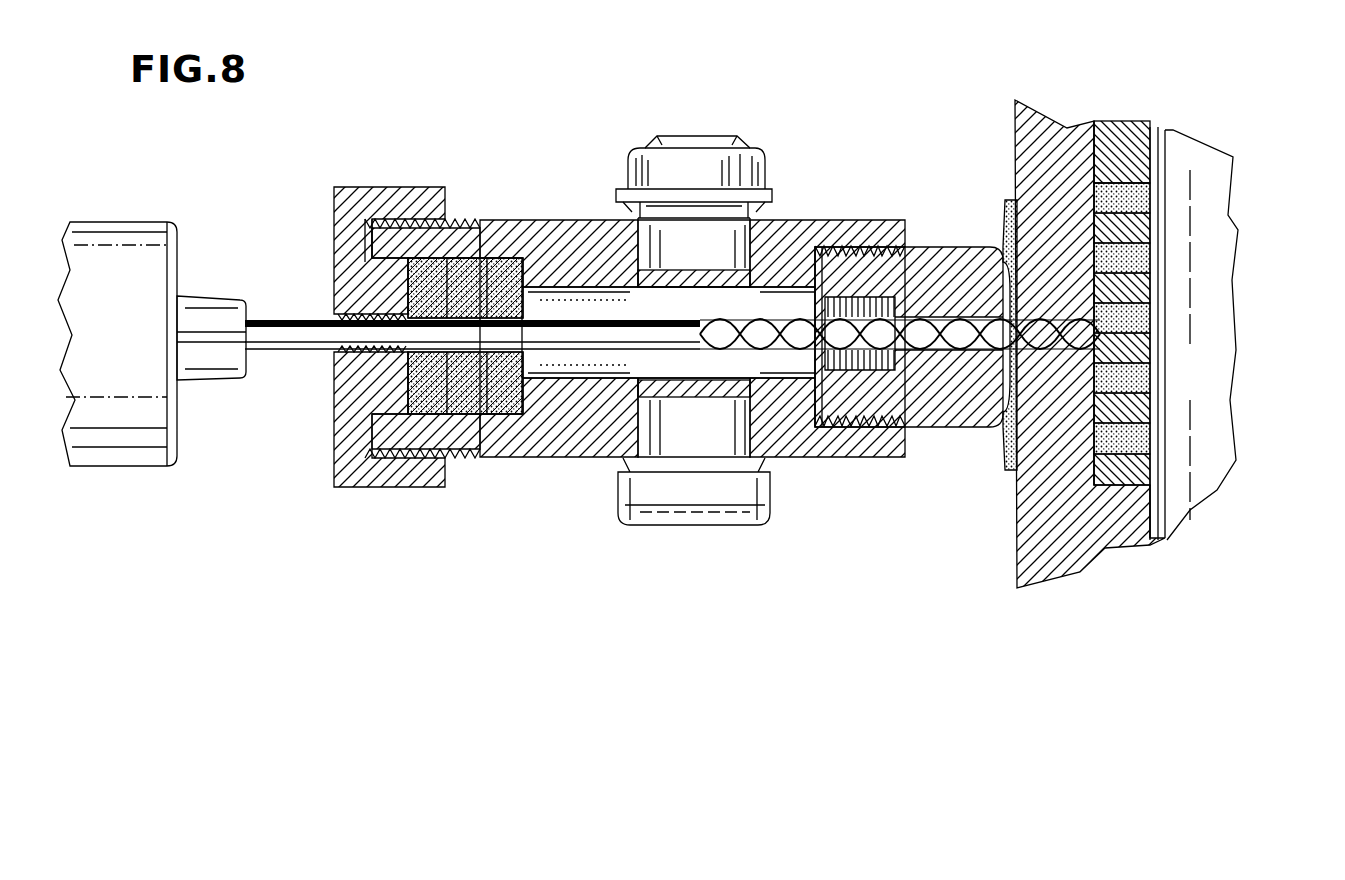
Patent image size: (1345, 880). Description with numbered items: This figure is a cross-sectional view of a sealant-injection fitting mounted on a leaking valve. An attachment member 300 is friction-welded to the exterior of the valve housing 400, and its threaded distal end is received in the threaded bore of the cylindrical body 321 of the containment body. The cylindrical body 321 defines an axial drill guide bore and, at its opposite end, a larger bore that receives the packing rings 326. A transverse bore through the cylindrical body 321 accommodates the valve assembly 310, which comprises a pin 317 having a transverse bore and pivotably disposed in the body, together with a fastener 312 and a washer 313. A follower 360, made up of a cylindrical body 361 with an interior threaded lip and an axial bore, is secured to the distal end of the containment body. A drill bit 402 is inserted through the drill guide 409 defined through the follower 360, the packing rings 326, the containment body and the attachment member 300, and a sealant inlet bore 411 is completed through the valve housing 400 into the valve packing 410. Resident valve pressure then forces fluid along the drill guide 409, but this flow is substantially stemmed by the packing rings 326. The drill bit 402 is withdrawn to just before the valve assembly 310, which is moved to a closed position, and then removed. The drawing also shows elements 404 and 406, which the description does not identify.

The attachment member 300 is at (933, 170).
The valve assembly 310 is at (731, 98).
The fastener 312 is at (755, 150).
The washer 313 is at (640, 220).
The pin 317 is at (690, 526).
The cylindrical body 321 is at (851, 460).
The packing rings 326 is at (415, 285).
The follower 360 is at (389, 366).
The cylindrical body 361 is at (373, 187).
The valve housing 400 is at (1082, 145).
The drill bit 402 is at (288, 380).
The knob plate 404 is at (125, 466).
The gasket 406 is at (1006, 495).
The drill guide 409 is at (935, 305).
The valve packing 410 is at (1160, 405).
The sealant inlet bore 411 is at (1150, 262).